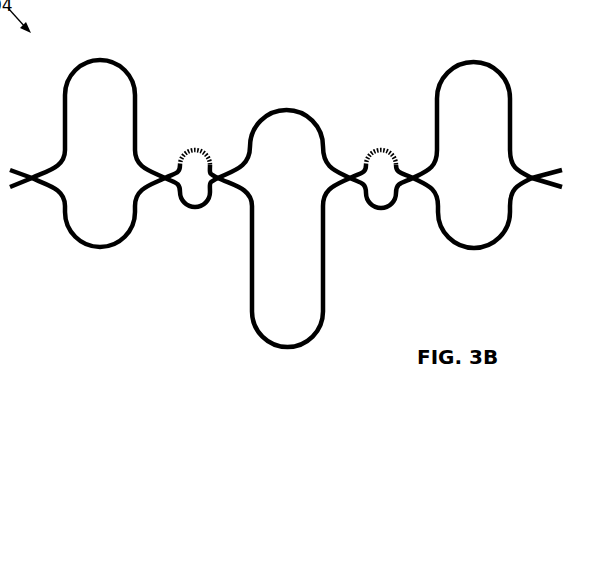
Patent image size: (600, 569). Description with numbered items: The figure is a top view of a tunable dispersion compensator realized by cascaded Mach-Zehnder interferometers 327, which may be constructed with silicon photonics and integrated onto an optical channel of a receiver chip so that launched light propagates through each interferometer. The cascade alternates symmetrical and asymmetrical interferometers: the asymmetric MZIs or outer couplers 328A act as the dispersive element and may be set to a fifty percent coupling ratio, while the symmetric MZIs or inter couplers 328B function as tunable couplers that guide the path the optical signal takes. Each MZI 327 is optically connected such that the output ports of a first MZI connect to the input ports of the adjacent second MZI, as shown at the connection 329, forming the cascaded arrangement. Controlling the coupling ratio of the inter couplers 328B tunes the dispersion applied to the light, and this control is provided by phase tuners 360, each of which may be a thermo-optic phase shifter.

The cascaded Mach-Zehnder interferometers 327 is at (333, 363).
The asymmetric MZI (outer coupler) 328A is at (250, 267).
The symmetric MZI (inter coupler) 328B is at (382, 152).
The optical connection between adjacent MZIs 329 is at (148, 193).
The phase tuner 360 is at (188, 143).